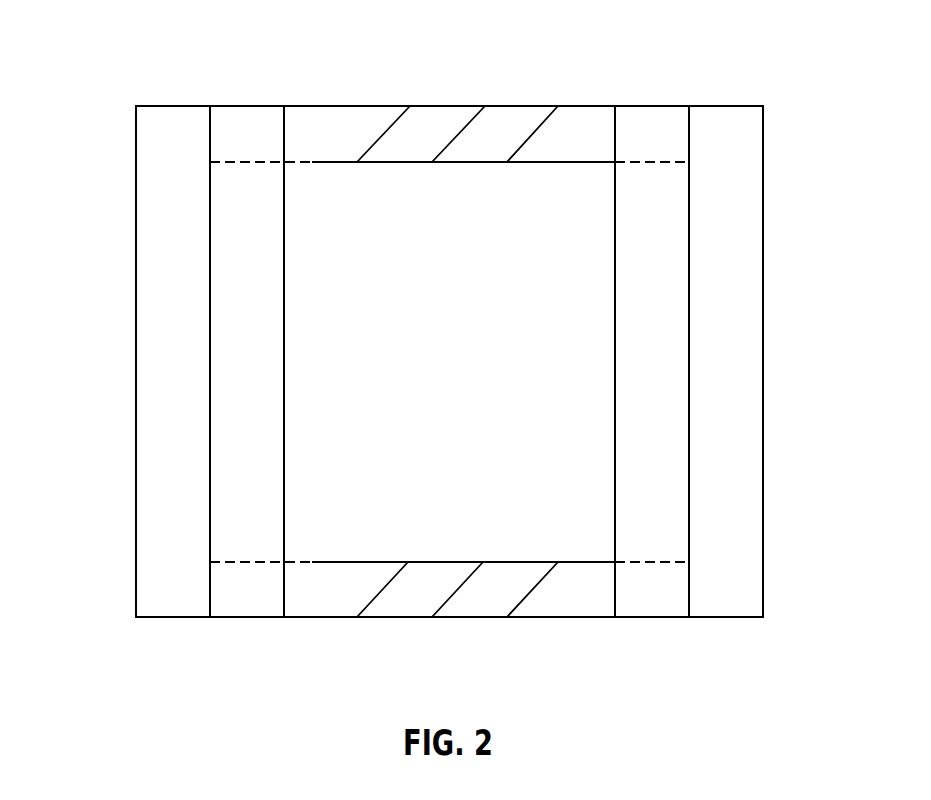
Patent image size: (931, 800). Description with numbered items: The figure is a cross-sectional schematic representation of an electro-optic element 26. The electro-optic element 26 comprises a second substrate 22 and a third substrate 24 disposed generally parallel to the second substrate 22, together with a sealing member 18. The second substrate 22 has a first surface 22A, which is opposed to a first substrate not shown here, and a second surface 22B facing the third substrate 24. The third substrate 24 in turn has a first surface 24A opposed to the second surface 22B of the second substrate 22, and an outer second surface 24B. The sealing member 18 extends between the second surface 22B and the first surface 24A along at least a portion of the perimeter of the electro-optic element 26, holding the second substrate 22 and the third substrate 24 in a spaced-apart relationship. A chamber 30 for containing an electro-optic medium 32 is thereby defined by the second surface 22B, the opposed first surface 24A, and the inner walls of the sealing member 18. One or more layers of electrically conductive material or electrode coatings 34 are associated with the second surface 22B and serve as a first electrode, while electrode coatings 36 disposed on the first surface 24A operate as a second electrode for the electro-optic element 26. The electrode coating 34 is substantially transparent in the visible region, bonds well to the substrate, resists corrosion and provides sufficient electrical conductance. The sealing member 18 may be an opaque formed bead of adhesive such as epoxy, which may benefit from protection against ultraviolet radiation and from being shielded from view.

The sealing member 18 is at (353, 122).
The second substrate 22 is at (175, 617).
The first surface 22A is at (136, 290).
The second surface 22B is at (210, 202).
The third substrate 24 is at (725, 617).
The first surface 24A is at (689, 202).
The second surface 24B is at (763, 288).
The electro-optic element 26 is at (745, 80).
The chamber 30 is at (455, 364).
The electro-optic medium 32 is at (537, 523).
The electrode coating 34 is at (243, 531).
The electrode coating 36 is at (657, 532).